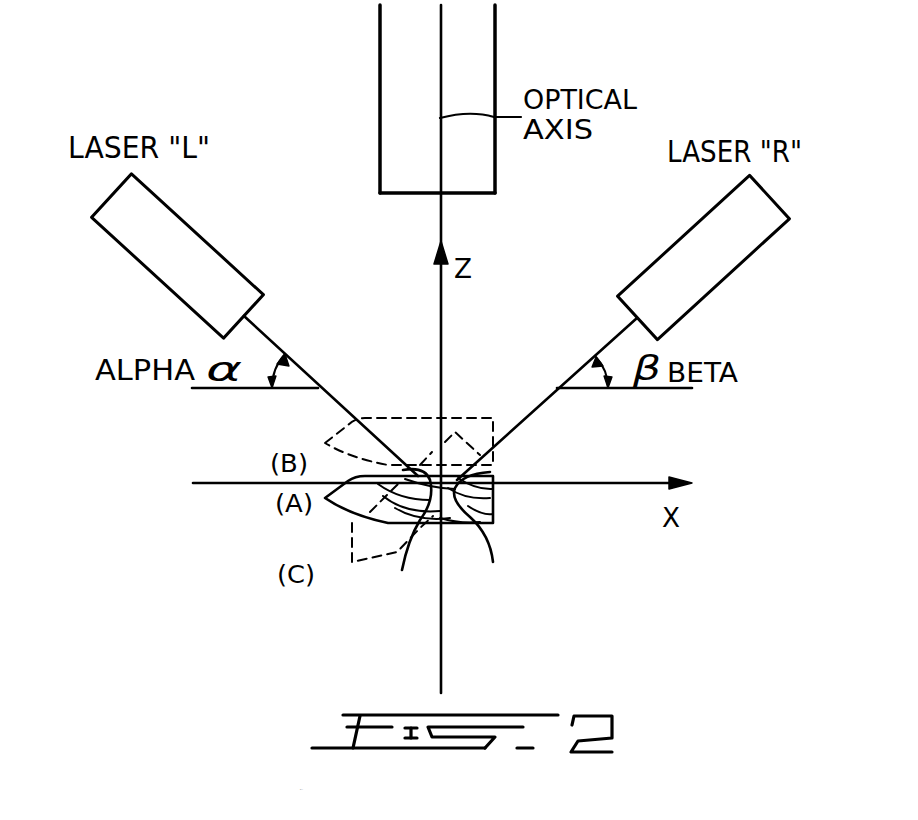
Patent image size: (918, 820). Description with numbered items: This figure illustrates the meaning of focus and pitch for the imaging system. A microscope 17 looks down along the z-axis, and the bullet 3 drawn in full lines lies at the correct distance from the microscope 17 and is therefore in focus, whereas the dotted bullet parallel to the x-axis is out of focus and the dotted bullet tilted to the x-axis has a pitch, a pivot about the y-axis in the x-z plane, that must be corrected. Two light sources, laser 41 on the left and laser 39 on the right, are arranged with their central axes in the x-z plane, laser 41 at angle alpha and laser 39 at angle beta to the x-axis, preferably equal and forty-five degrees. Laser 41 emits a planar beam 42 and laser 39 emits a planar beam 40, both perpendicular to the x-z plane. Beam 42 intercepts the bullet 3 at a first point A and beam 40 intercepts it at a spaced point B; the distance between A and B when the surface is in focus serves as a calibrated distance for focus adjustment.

The microscope 17 is at (487, 35).
The light source (laser L) 41 is at (150, 258).
The planar beam 42 is at (300, 368).
The planar beam 40 is at (572, 374).
The light source (laser R) 39 is at (733, 248).
The bullet 3 is at (493, 513).
The first intercept point A is at (398, 542).
The second intercept point B is at (477, 536).